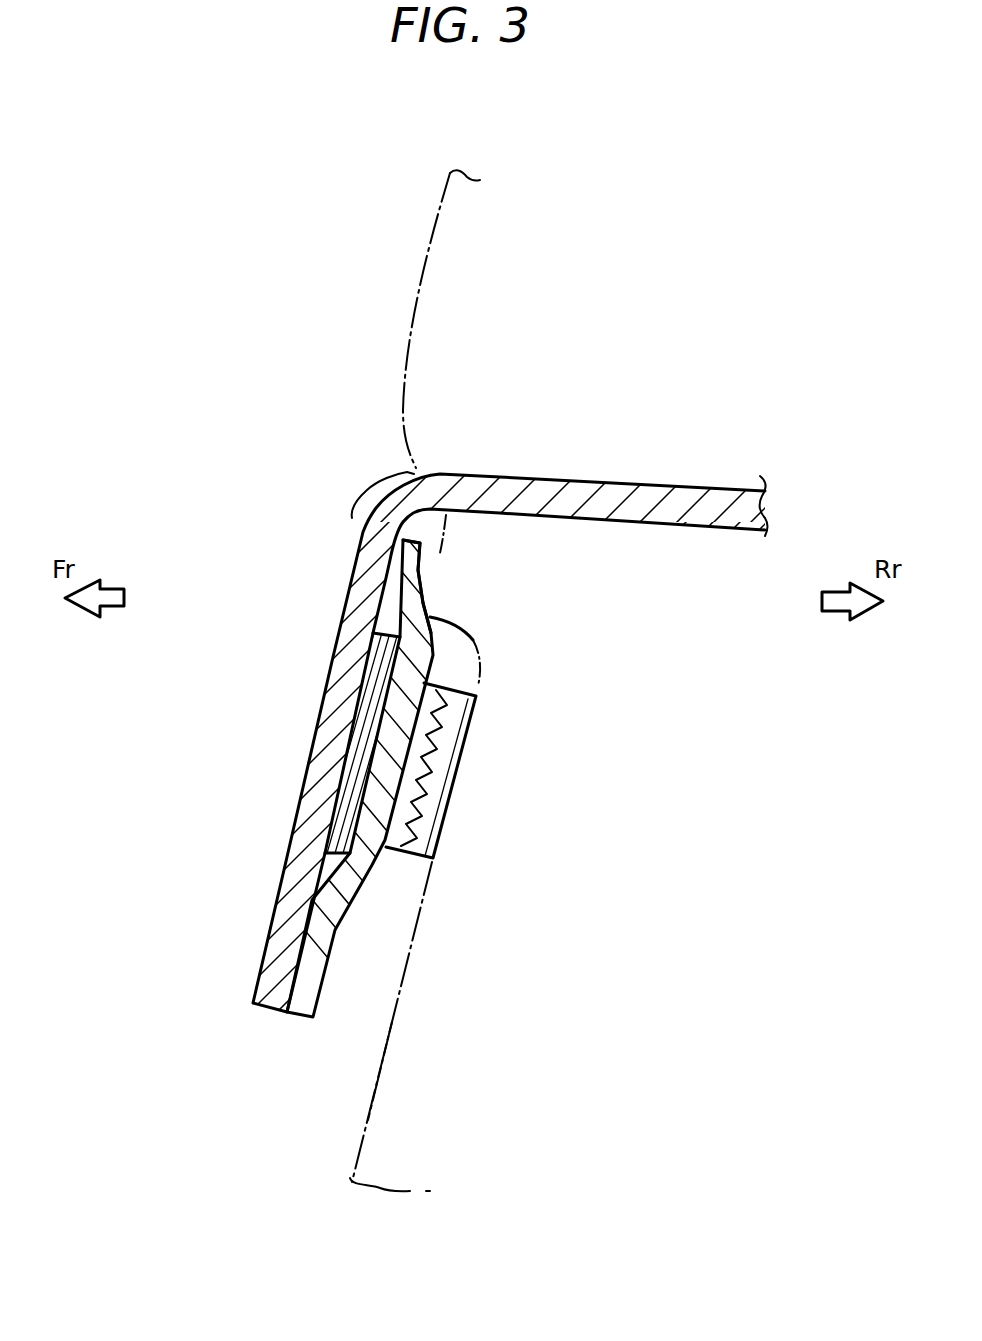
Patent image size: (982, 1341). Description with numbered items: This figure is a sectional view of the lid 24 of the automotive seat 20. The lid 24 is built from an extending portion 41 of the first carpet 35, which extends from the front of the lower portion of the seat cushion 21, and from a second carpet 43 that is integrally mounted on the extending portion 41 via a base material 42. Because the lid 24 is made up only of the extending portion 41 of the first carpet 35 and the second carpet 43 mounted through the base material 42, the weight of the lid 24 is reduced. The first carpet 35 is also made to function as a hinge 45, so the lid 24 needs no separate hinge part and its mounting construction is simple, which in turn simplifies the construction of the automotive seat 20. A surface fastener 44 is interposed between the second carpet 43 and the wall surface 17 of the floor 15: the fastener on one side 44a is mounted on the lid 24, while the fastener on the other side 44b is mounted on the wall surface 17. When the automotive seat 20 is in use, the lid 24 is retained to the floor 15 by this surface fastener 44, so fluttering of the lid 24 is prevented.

The automotive seat 20 is at (293, 168).
The seat cushion 21 is at (413, 325).
The first carpet 35 is at (462, 458).
The hinge 45 is at (373, 485).
The lid 24 is at (302, 515).
The extending portion 41 is at (263, 958).
The base material 42 is at (440, 555).
The second carpet 43 is at (422, 562).
The surface fastener 44 is at (397, 860).
The fastener on one side 44a is at (420, 753).
The fastener on the other side 44b is at (455, 715).
The wall surface 17 is at (368, 1131).
The floor 15 is at (312, 1178).